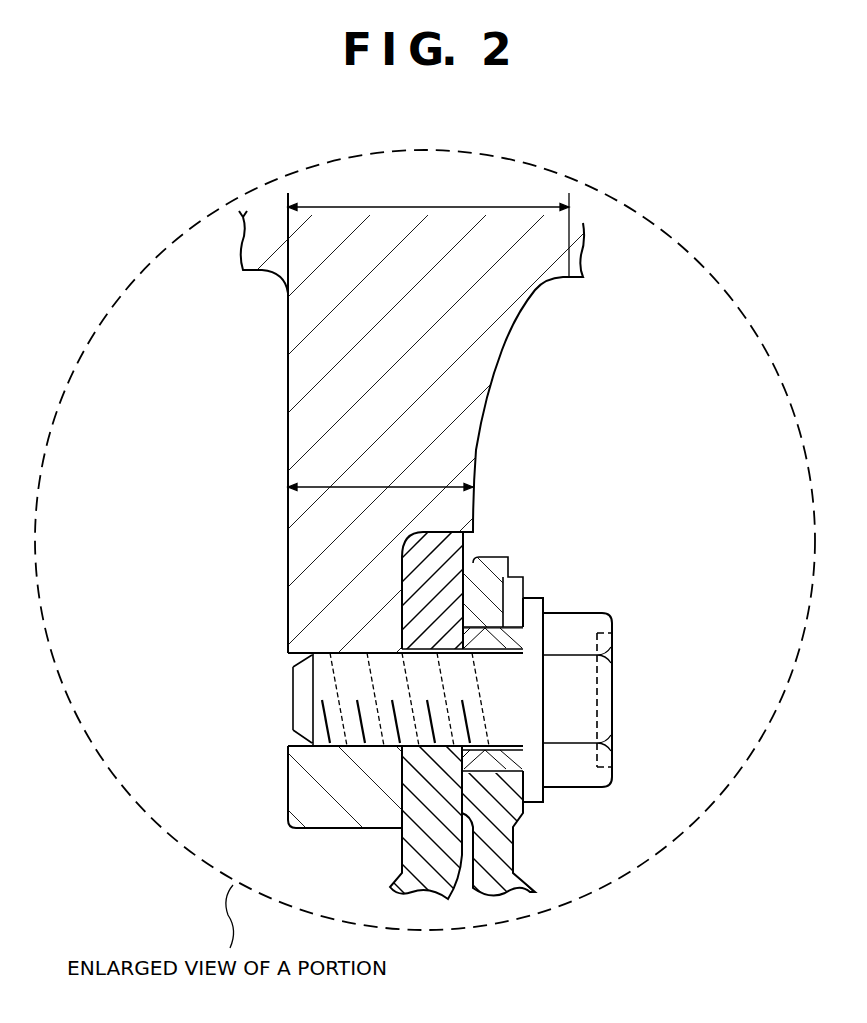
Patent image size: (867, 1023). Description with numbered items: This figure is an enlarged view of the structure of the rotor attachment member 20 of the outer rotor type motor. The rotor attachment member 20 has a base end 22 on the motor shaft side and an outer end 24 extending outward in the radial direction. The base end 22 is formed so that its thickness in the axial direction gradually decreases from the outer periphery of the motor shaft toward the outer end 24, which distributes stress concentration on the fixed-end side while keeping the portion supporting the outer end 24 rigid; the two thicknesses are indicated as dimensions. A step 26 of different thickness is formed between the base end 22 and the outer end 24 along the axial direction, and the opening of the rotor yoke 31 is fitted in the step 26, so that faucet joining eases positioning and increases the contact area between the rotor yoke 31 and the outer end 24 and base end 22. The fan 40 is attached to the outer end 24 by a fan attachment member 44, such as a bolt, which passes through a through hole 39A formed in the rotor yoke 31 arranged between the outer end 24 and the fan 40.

The rotor attachment member 20 is at (449, 556).
The base end 22 is at (288, 422).
The outer end 24 is at (288, 778).
The step 26 is at (447, 530).
The rotor yoke 31 is at (418, 856).
The through hole 39A is at (420, 637).
The fan 40 is at (512, 857).
The fan attachment member 44 is at (575, 777).